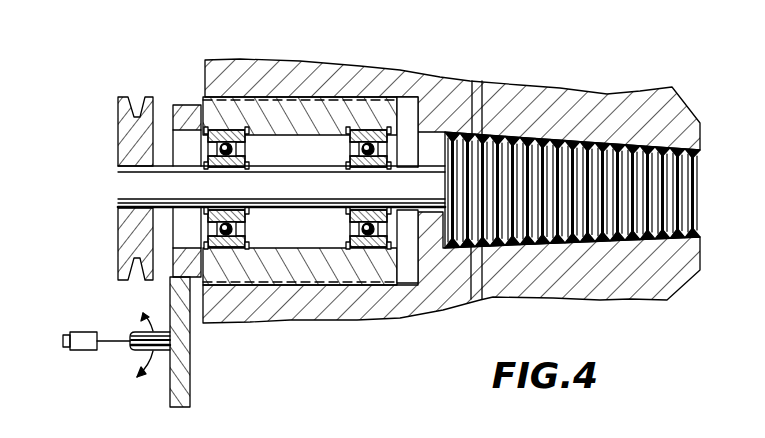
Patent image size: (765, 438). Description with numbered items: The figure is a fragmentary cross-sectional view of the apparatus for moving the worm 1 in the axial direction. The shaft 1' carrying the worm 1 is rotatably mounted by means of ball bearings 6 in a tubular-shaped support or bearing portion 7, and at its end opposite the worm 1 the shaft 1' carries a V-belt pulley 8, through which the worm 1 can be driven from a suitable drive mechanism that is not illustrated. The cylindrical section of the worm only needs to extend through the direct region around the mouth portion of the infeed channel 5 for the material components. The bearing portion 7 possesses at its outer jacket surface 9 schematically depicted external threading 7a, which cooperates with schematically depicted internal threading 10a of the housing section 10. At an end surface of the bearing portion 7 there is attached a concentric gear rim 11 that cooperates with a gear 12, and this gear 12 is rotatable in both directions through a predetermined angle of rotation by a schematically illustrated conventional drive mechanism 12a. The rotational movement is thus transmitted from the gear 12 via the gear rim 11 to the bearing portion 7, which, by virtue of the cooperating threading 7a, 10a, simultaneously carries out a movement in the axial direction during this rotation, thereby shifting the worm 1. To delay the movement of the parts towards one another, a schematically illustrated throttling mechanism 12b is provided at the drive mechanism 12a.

The worm 1 is at (451, 178).
The shaft 1' is at (439, 120).
The infeed channel 5 is at (485, 108).
The ball bearings 6 is at (244, 250).
The bearing portion 7 is at (391, 98).
The external threading 7a is at (357, 110).
The V-belt pulley 8 is at (126, 247).
The outer jacket surface 9 is at (226, 72).
The housing section 10 is at (314, 72).
The internal threading 10a is at (267, 72).
The gear rim 11 is at (180, 106).
The gear 12 is at (192, 377).
The drive mechanism 12a is at (84, 352).
The throttling mechanism 12b is at (63, 348).